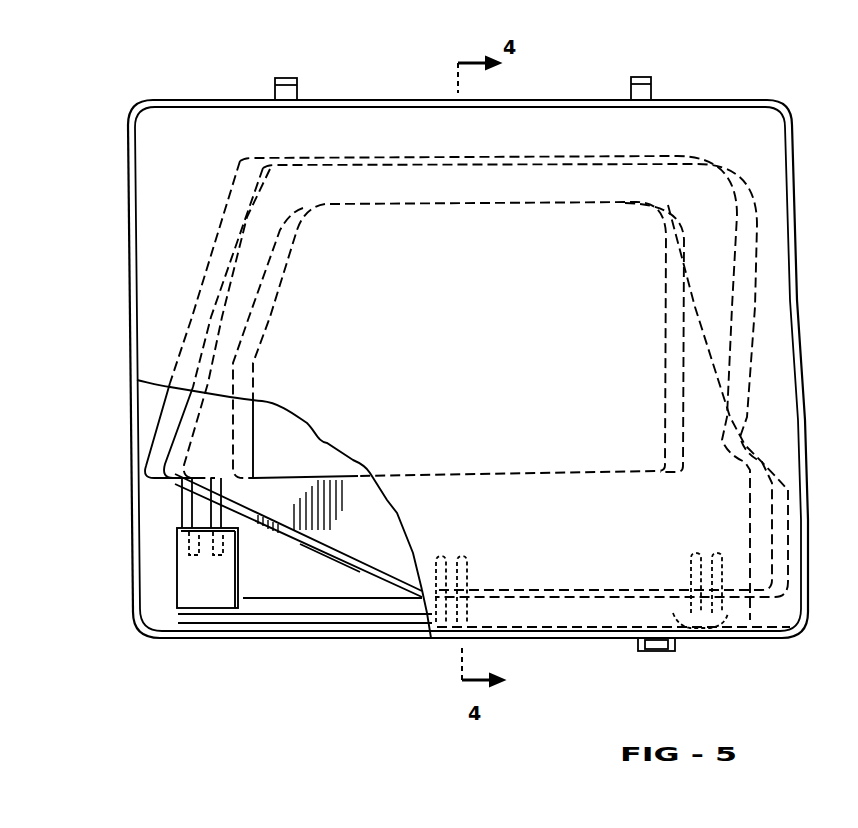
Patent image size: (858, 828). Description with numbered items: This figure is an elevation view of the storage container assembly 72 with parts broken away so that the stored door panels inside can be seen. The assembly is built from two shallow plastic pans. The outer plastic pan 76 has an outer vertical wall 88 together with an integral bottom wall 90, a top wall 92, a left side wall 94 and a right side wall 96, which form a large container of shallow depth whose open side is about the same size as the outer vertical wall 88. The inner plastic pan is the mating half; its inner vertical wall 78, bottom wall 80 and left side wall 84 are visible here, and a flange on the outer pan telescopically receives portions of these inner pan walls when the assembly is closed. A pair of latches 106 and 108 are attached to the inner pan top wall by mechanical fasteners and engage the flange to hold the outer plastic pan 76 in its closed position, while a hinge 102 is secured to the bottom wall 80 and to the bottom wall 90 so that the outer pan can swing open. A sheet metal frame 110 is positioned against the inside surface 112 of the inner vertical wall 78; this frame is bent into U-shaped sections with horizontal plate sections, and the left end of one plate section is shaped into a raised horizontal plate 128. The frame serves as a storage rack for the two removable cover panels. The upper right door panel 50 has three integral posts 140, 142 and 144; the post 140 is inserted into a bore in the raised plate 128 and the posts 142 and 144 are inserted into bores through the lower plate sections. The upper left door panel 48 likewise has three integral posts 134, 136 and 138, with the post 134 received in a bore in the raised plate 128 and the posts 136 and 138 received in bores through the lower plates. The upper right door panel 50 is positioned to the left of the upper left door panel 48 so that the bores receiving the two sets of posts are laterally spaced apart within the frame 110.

The storage container assembly 72 is at (445, 362).
The top wall 92 is at (740, 99).
The left side wall 94 is at (128, 250).
The right side wall 96 is at (808, 487).
The bottom wall 90 is at (778, 639).
The outer plastic pan 76 is at (757, 146).
The latch 106 is at (283, 90).
The latch 108 is at (650, 82).
The hinge 102 is at (638, 646).
The outer vertical wall 88 is at (135, 310).
The inside surface 112 is at (140, 417).
The integral post 134 is at (253, 480).
The left side wall 84 is at (130, 383).
The integral post 142 is at (424, 632).
The inner vertical wall 78 is at (140, 540).
The bottom wall 80 is at (160, 622).
The sheet metal frame 110 is at (373, 592).
The raised horizontal plate 128 is at (177, 522).
The integral post 140 is at (185, 492).
The upper right door panel 50 is at (318, 553).
The upper left door panel 48 is at (340, 568).
The integral post 136 is at (470, 600).
The integral post 138 is at (712, 616).
The integral post 144 is at (680, 615).